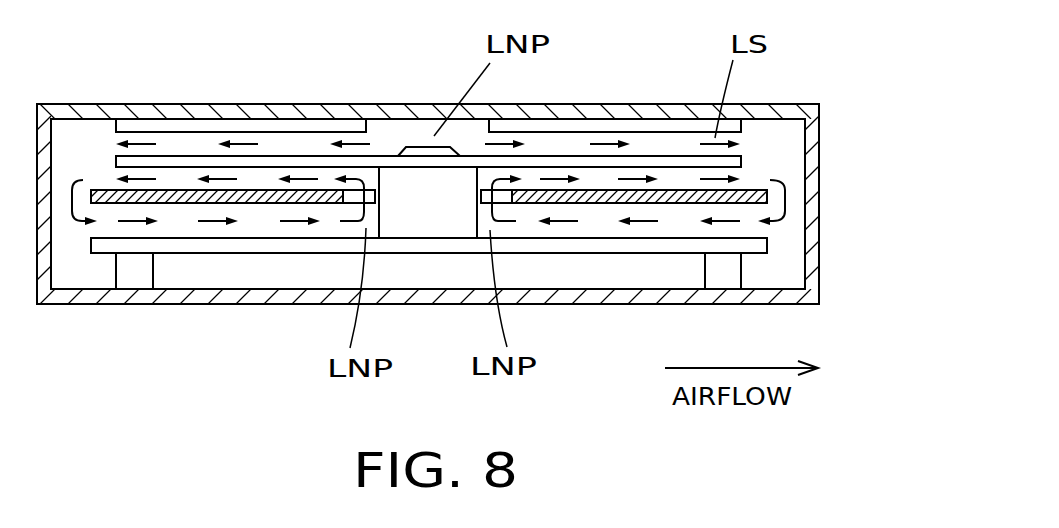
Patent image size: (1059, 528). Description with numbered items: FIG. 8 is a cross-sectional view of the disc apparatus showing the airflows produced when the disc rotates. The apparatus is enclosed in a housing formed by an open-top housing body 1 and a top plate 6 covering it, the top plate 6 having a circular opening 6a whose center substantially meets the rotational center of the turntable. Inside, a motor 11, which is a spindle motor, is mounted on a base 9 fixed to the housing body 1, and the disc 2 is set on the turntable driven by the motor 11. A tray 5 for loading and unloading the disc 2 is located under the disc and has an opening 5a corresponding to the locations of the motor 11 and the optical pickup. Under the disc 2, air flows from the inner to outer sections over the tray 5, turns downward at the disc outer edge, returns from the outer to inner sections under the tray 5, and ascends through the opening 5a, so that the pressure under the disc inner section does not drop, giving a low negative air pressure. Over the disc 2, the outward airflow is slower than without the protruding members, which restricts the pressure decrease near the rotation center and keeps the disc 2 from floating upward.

The housing body 1 is at (295, 305).
The disc 2 is at (670, 155).
The tray 5 is at (174, 189).
The opening 5a is at (371, 191).
The top plate 6 is at (432, 134).
The circular opening 6a is at (250, 118).
The base 9 is at (235, 253).
The motor 11 is at (421, 240).